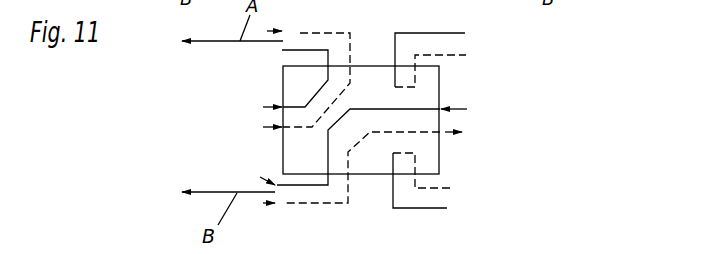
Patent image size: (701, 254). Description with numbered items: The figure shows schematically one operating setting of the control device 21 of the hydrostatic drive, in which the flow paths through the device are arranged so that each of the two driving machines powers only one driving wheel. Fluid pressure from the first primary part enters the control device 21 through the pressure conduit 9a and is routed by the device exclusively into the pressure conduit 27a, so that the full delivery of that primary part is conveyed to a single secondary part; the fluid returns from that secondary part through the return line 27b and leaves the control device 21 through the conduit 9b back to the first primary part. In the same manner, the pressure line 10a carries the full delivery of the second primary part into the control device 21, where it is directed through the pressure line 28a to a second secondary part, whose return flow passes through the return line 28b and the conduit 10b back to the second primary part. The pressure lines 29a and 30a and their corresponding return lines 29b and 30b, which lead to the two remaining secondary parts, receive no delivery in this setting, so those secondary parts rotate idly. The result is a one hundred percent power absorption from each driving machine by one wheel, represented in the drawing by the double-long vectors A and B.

The control device 21 is at (427, 95).
The pressure conduit 27a is at (281, 50).
The return line 27b is at (297, 33).
The pressure line 28a is at (248, 175).
The return line 28b is at (285, 203).
The pressure line 29a is at (455, 35).
The return line 29b is at (460, 57).
The pressure line 30a is at (447, 208).
The return line 30b is at (453, 189).
The pressure conduit 9a is at (261, 105).
The conduit 9b is at (260, 127).
The pressure line 10a is at (391, 142).
The conduit 10b is at (393, 163).